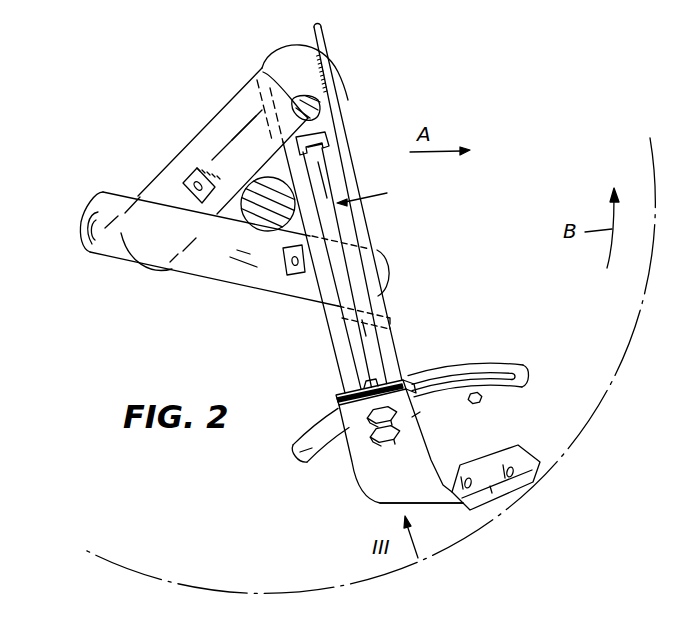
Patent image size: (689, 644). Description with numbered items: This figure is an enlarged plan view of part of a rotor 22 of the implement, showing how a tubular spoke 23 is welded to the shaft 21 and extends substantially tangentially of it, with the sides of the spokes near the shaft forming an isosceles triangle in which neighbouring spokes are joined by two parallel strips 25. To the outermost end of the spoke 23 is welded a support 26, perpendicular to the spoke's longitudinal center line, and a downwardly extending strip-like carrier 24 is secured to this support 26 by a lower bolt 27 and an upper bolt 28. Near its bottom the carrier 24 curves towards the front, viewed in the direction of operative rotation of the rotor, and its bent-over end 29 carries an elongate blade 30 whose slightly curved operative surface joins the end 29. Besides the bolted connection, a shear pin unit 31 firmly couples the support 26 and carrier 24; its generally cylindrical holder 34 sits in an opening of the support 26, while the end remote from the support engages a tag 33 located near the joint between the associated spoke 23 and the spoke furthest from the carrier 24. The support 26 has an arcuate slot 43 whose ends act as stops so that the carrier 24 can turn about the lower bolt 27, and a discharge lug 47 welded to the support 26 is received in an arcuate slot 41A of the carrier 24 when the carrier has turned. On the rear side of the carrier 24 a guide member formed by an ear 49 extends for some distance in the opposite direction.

The shaft 21 is at (270, 212).
The rotor 22 is at (125, 265).
The tubular spoke 23 is at (212, 126).
The carrier 24 is at (413, 447).
The parallel strip 25 is at (326, 43).
The support 26 is at (507, 345).
The lower bolt 27 is at (372, 444).
The upper bolt 28 is at (347, 440).
The bent-over end 29 is at (420, 493).
The blade 30 is at (522, 457).
The shear pin unit 31 is at (376, 195).
The tag 33 is at (330, 143).
The holder 34 is at (340, 228).
The arcuate slot 41A is at (424, 411).
The slot 43 is at (437, 382).
The discharge lug 47 is at (480, 402).
The ear 49 is at (308, 457).